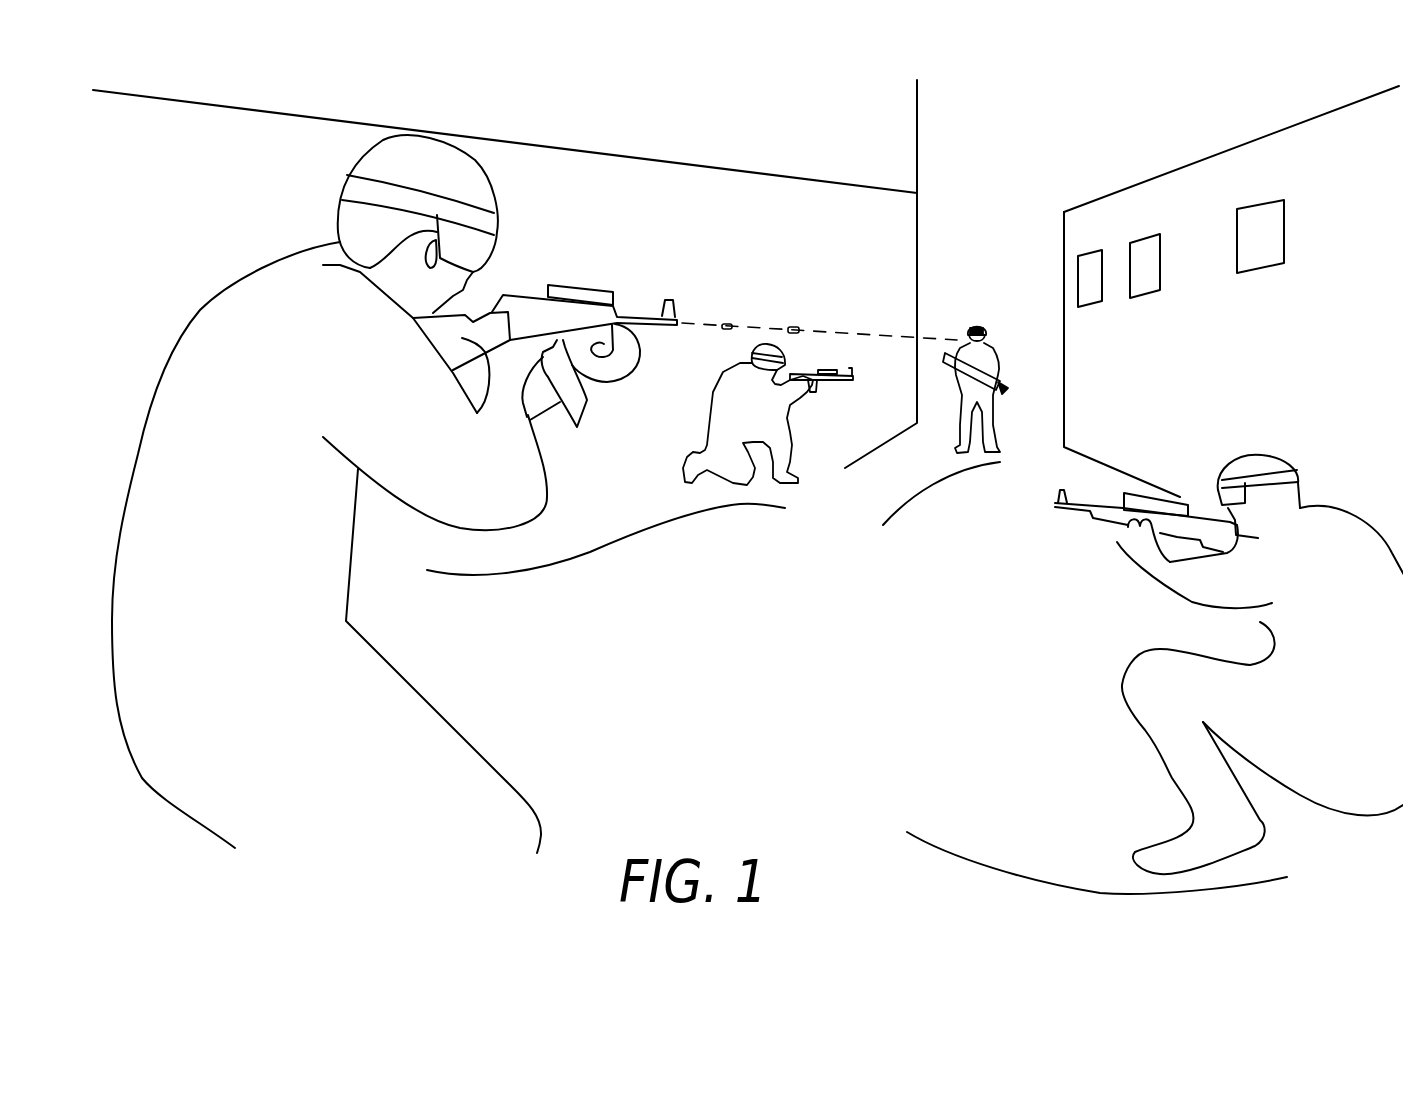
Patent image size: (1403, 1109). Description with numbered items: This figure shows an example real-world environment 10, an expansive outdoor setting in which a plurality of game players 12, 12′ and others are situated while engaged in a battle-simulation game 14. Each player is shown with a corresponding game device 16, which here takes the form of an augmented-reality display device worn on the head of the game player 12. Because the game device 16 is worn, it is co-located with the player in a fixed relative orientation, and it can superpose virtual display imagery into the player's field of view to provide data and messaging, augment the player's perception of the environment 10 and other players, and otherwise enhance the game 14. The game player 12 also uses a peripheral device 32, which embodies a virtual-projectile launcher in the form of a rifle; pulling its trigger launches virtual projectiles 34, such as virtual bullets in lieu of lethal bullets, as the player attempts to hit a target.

The real-world environment 10 is at (1104, 143).
The game player 12 is at (176, 354).
The game player 12′ is at (988, 345).
The game 14 is at (676, 690).
The game device 16 is at (500, 223).
The peripheral device 32 is at (532, 288).
The virtual projectile 34 is at (792, 326).